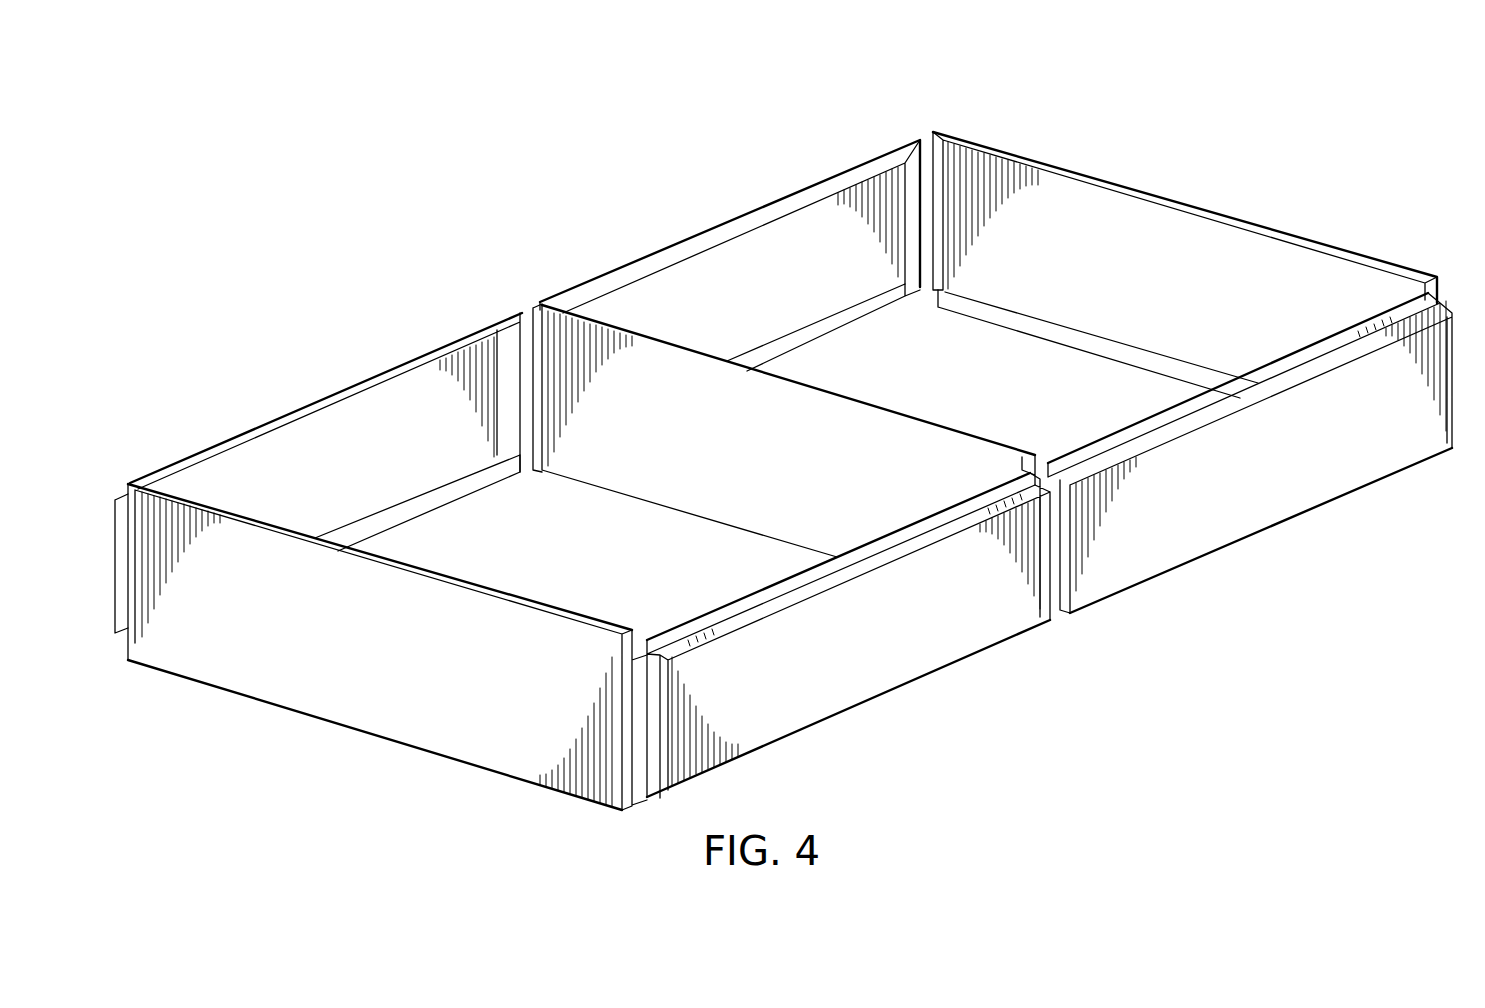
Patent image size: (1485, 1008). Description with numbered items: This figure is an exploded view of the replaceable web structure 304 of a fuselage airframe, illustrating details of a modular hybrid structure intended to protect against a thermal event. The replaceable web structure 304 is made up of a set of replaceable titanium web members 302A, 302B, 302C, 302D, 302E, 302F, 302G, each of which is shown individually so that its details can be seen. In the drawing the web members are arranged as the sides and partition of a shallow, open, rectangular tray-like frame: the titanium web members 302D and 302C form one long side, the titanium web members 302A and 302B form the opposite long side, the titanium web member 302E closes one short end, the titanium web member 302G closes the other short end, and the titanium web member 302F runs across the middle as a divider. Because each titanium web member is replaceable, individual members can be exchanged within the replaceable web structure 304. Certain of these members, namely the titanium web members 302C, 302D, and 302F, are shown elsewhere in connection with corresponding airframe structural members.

The replaceable web structure 304 is at (383, 122).
The replaceable titanium web member 302A is at (865, 727).
The replaceable titanium web member 302B is at (1267, 548).
The replaceable titanium web member 302C is at (740, 188).
The replaceable titanium web member 302D is at (300, 380).
The replaceable titanium web member 302E is at (330, 743).
The replaceable titanium web member 302F is at (897, 403).
The replaceable titanium web member 302G is at (1183, 180).